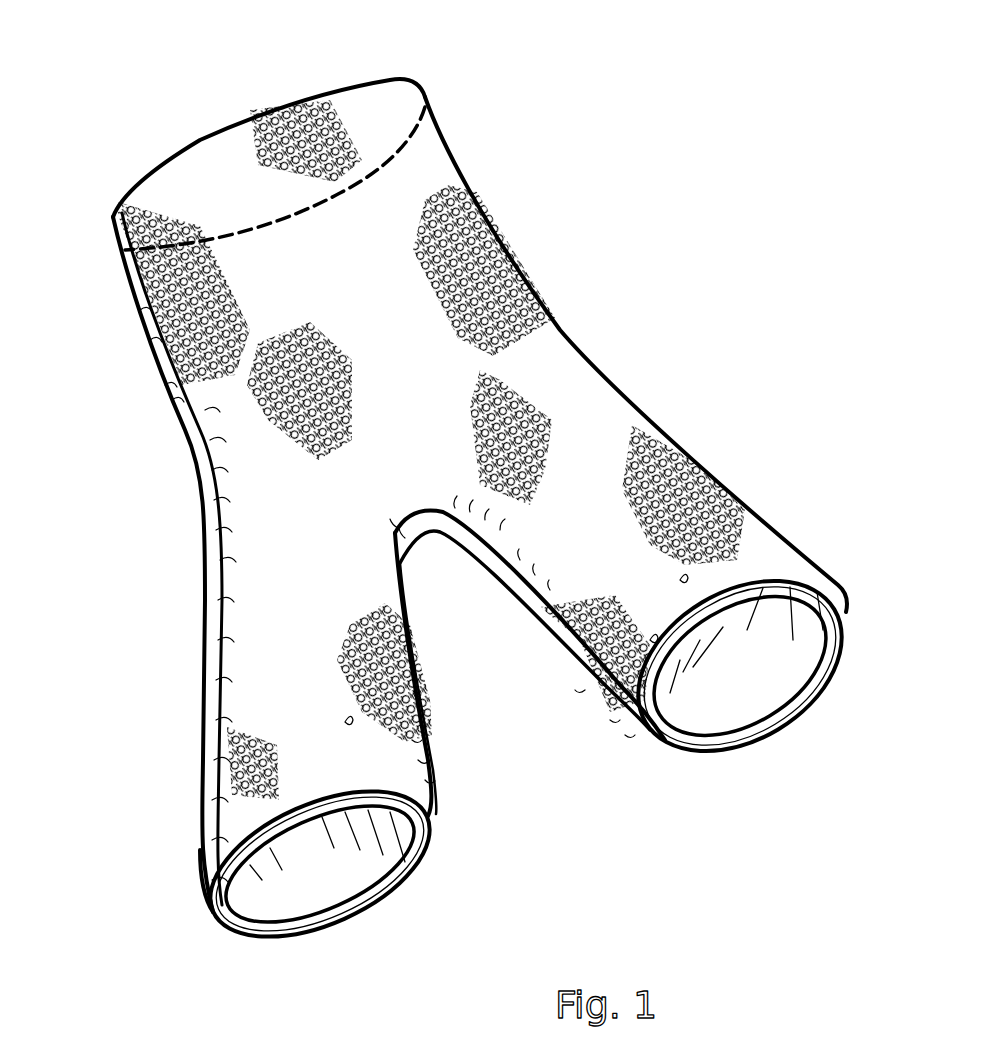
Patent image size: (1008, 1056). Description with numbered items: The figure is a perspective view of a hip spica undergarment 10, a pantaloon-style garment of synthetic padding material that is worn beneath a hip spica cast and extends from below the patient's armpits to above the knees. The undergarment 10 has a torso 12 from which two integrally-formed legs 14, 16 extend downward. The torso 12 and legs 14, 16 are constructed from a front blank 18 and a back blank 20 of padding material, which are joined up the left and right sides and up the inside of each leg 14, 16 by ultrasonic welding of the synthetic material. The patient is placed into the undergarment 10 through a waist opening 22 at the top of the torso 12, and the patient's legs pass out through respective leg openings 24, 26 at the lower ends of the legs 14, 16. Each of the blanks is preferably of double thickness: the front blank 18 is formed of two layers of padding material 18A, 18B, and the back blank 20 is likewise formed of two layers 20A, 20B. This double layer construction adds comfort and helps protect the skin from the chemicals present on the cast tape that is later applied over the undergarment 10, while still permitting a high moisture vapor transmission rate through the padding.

The hip spica undergarment 10 is at (118, 350).
The torso 12 is at (267, 290).
The leg 14 is at (292, 750).
The leg 16 is at (615, 415).
The front blank 18 is at (406, 249).
The layer of padding material 18A is at (782, 577).
The layer of padding material 18B is at (805, 587).
The back blank 20 is at (200, 470).
The layer of padding material 20A is at (232, 929).
The layer of padding material 20B is at (265, 933).
The waist opening 22 is at (208, 173).
The leg opening 24 is at (303, 828).
The leg opening 26 is at (730, 697).